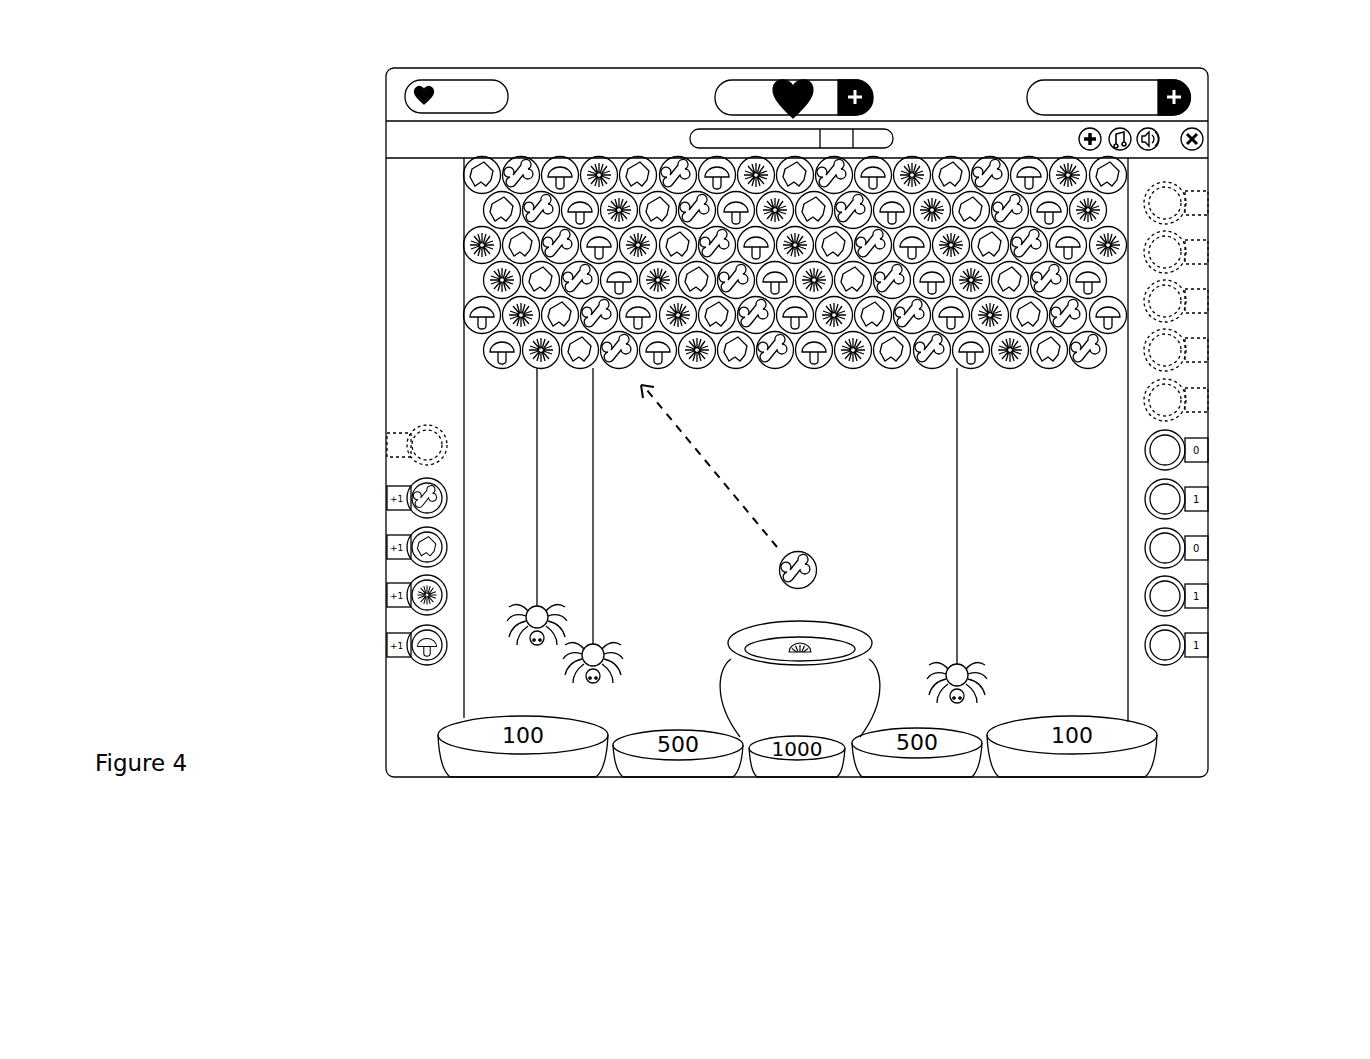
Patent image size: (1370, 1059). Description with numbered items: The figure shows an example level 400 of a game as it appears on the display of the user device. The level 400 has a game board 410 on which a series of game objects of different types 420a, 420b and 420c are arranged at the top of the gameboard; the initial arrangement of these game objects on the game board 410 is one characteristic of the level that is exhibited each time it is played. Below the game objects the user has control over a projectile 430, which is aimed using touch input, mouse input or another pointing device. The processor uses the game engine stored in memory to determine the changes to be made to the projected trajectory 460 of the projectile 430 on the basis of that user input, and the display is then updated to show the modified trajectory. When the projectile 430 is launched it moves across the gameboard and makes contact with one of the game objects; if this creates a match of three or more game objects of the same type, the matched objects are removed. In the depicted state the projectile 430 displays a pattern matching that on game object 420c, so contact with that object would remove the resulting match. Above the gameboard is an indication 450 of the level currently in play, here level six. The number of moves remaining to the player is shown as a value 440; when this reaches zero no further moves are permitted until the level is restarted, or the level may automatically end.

The level 400 is at (1266, 672).
The game board 410 is at (464, 393).
The game object 420a is at (466, 208).
The game object 420b is at (485, 282).
The game object 420c is at (1107, 347).
The projectile 430 is at (779, 563).
The value 440 is at (780, 687).
The indication 450 is at (580, 80).
The projected trajectory 460 is at (725, 488).